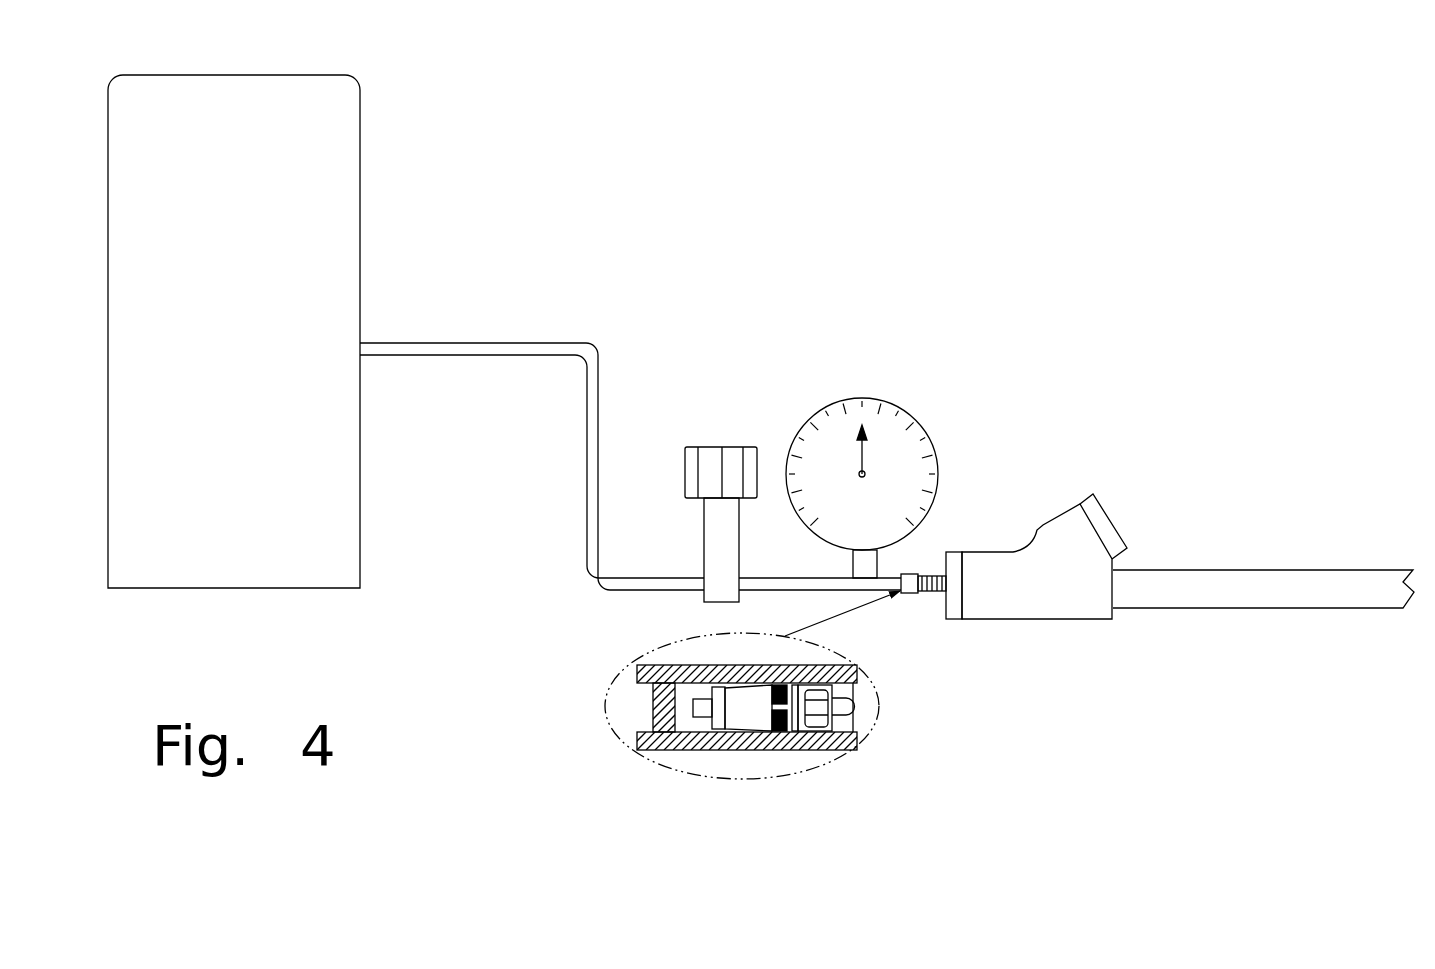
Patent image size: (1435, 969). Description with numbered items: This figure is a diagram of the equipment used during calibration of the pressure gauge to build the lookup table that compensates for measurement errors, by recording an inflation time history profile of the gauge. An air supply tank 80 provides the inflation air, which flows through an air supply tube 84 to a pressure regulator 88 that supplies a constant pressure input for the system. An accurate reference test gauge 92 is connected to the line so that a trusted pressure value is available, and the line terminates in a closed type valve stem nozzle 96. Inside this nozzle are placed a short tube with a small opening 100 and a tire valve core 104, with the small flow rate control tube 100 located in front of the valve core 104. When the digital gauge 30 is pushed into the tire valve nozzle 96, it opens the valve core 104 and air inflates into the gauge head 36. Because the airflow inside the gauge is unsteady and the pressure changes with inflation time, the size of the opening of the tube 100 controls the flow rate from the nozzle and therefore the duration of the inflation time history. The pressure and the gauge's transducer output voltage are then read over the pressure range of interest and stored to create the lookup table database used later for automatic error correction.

The air supply tank 80 is at (360, 145).
The air supply tube 84 is at (503, 340).
The pressure regulator 88 is at (700, 546).
The reference test gauge 92 is at (836, 398).
The gauge head 36 is at (1104, 516).
The digital gauge 30 is at (1212, 625).
The closed type valve stem nozzle 96 is at (930, 597).
The flow rate control tube 100 is at (653, 711).
The tire valve core 104 is at (796, 718).